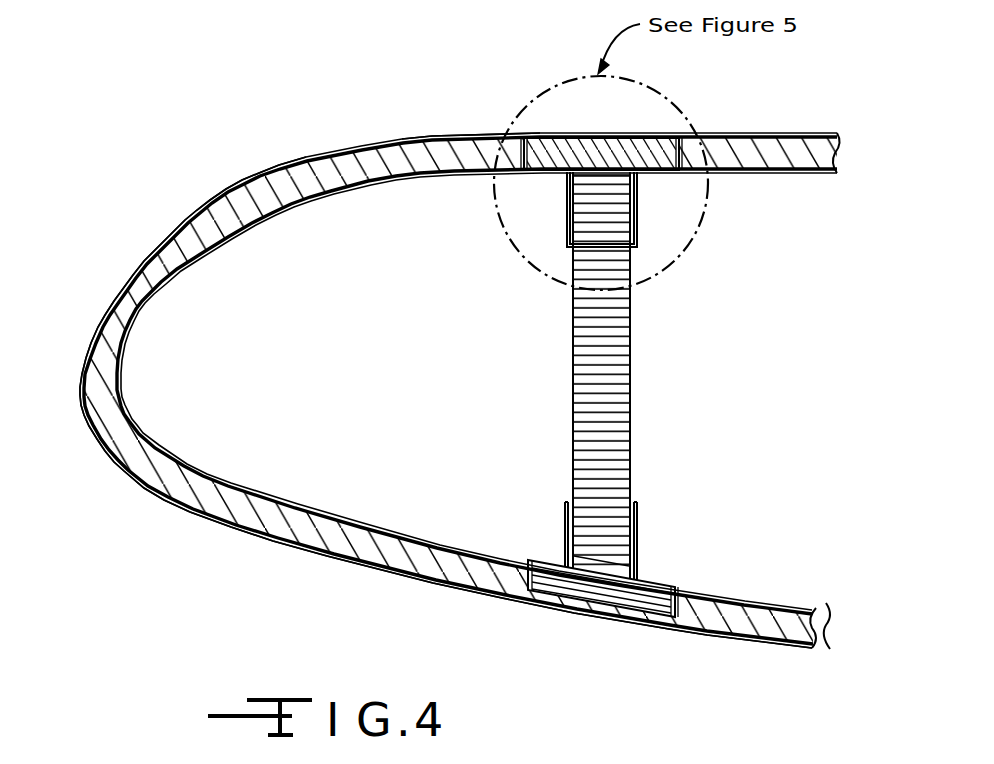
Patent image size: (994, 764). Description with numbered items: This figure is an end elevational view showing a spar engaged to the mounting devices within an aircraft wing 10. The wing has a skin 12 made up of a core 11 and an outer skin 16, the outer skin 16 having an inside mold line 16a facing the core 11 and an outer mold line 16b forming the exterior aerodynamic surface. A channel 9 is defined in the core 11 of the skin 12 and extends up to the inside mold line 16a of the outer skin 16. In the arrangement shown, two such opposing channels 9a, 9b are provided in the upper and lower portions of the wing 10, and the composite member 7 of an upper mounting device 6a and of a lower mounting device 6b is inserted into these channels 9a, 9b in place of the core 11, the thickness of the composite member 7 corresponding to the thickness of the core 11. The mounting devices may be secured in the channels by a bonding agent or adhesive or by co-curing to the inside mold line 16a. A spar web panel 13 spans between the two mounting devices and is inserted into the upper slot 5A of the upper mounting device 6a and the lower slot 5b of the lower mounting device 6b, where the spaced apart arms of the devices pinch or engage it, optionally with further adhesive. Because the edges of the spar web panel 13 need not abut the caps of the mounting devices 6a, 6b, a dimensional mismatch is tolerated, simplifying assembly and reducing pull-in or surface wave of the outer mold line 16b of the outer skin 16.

The upper slot 5A is at (601, 212).
The lower slot 5b is at (604, 530).
The upper mounting device 6a is at (655, 192).
The lower mounting device 6b is at (645, 548).
The composite member 7 is at (612, 157).
The channel 9 is at (683, 172).
The upper channel 9a is at (523, 176).
The lower channel 9b is at (681, 583).
The aircraft wing 10 is at (236, 555).
The core 11 is at (367, 543).
The skin 12 is at (828, 634).
The spar web panel 13 is at (633, 342).
The outer skin 16 is at (478, 374).
The inside mold line 16a is at (497, 148).
The outer mold line 16b is at (184, 228).